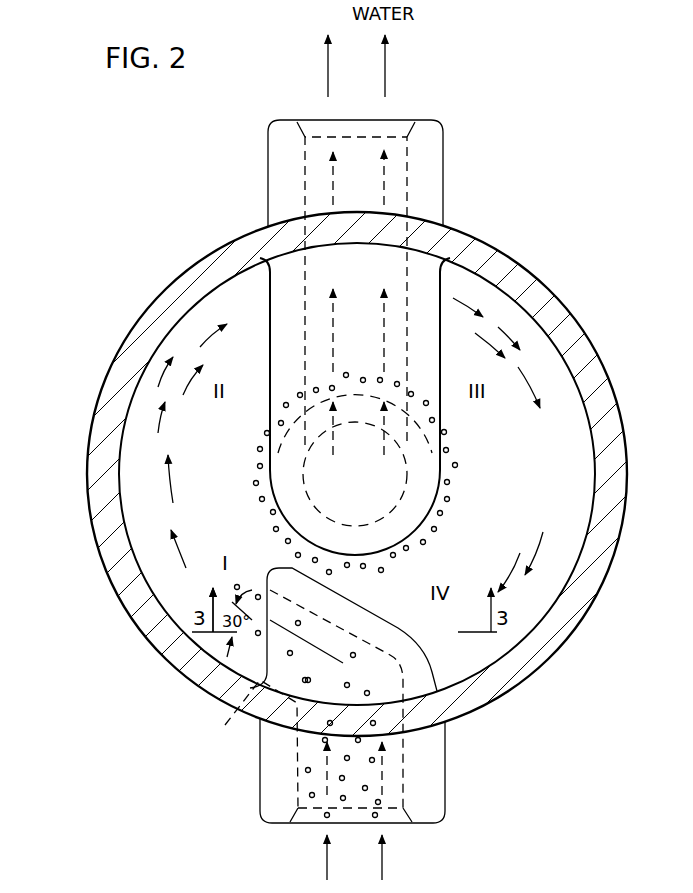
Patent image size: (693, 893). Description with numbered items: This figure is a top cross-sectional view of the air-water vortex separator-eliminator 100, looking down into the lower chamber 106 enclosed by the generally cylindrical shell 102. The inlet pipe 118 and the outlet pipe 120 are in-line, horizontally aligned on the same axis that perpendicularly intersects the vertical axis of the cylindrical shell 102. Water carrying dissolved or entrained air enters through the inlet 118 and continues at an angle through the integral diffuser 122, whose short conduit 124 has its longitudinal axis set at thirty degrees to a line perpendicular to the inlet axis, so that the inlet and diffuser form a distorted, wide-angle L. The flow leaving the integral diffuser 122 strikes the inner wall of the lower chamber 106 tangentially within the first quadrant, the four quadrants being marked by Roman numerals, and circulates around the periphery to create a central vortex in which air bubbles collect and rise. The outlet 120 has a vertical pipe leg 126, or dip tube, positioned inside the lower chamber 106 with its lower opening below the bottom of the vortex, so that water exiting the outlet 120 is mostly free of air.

The air-water vortex separator-eliminator 100 is at (552, 262).
The cylindrical shell 102 is at (604, 432).
The lower chamber 106 is at (142, 423).
The inlet pipe 118 is at (440, 812).
The outlet pipe 120 is at (435, 176).
The integral diffuser 122 is at (400, 636).
The short conduit 124 is at (247, 744).
The vertical pipe leg 126 is at (436, 518).